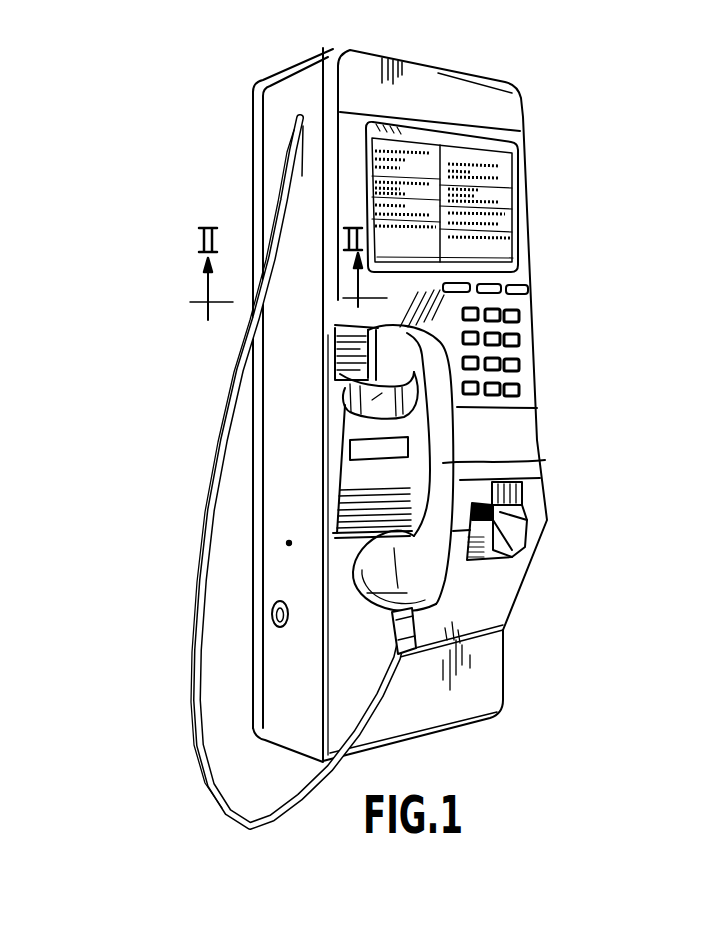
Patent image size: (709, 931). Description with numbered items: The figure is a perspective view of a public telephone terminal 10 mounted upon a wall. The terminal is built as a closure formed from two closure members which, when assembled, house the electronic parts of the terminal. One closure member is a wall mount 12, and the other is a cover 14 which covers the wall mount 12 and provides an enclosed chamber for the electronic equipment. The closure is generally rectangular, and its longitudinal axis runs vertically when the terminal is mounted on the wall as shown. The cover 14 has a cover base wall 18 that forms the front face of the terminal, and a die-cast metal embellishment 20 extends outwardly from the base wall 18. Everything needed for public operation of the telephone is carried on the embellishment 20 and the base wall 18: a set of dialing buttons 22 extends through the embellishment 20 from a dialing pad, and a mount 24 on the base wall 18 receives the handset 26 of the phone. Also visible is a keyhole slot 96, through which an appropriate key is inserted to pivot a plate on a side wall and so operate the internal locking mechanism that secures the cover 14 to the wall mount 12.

The public telephone terminal 10 is at (386, 414).
The wall mount 12 is at (245, 125).
The cover 14 is at (346, 48).
The cover base wall 18 is at (483, 690).
The die-cast metal embellishment 20 is at (533, 448).
The dialing buttons 22 is at (517, 365).
The mount 24 is at (383, 405).
The handset 26 is at (456, 465).
The keyhole slot 96 is at (268, 622).